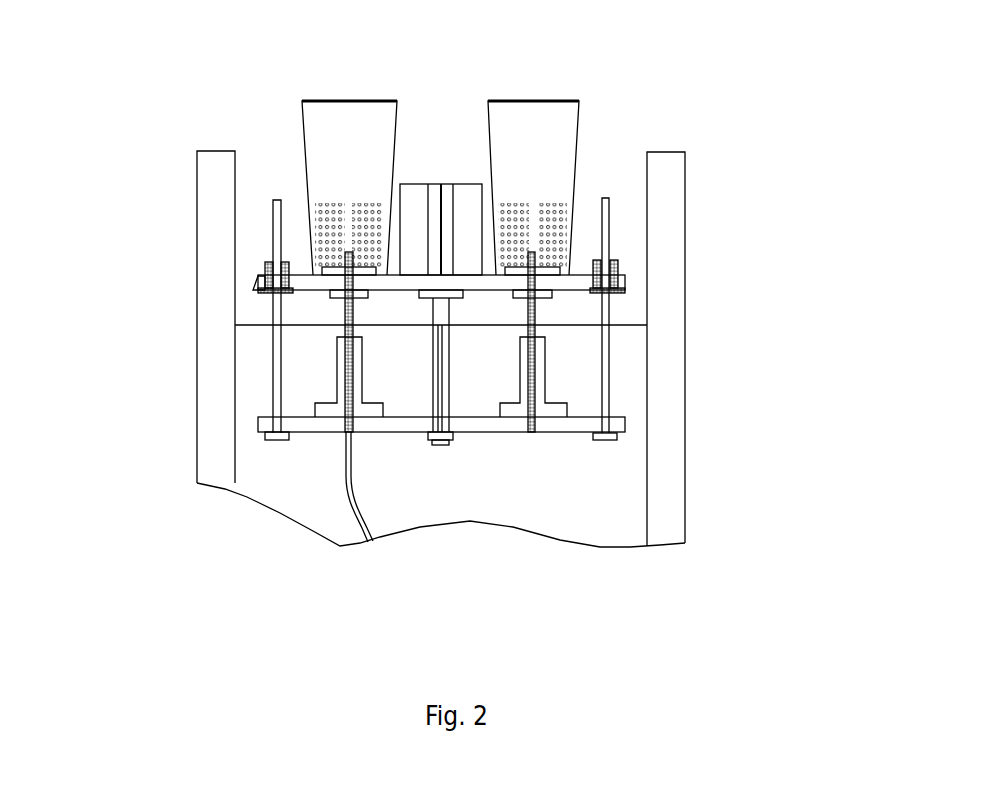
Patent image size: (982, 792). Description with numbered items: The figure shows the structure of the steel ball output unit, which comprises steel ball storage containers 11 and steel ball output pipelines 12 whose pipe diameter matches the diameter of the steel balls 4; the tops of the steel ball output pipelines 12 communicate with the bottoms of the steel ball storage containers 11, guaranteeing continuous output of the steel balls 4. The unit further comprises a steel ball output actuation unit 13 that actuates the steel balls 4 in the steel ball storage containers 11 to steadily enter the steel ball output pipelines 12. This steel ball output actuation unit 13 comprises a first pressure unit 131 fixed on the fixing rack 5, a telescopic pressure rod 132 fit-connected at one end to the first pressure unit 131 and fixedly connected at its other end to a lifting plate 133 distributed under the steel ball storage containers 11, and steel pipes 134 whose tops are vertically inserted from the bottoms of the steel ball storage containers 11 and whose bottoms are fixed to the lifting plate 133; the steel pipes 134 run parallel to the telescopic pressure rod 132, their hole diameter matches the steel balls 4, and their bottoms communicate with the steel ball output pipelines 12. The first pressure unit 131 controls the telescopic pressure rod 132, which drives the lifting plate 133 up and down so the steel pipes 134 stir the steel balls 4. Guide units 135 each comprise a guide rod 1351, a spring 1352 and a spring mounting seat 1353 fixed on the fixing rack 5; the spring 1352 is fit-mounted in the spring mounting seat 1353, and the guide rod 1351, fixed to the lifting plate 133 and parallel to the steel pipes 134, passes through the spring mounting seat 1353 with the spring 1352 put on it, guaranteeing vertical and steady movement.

The steel balls 4 is at (535, 274).
The fixing rack 5 is at (668, 290).
The steel ball storage containers 11 is at (348, 143).
The steel ball output pipelines 12 is at (353, 500).
The steel ball output actuation unit 13 is at (450, 440).
The first pressure unit 131 is at (418, 245).
The telescopic pressure rod 132 is at (441, 367).
The lifting plate 133 is at (565, 427).
The steel pipes 134 is at (345, 333).
The guide unit 135 is at (622, 292).
The guide rod 1351 is at (277, 343).
The spring 1352 is at (265, 265).
The spring mounting seat 1353 is at (260, 285).